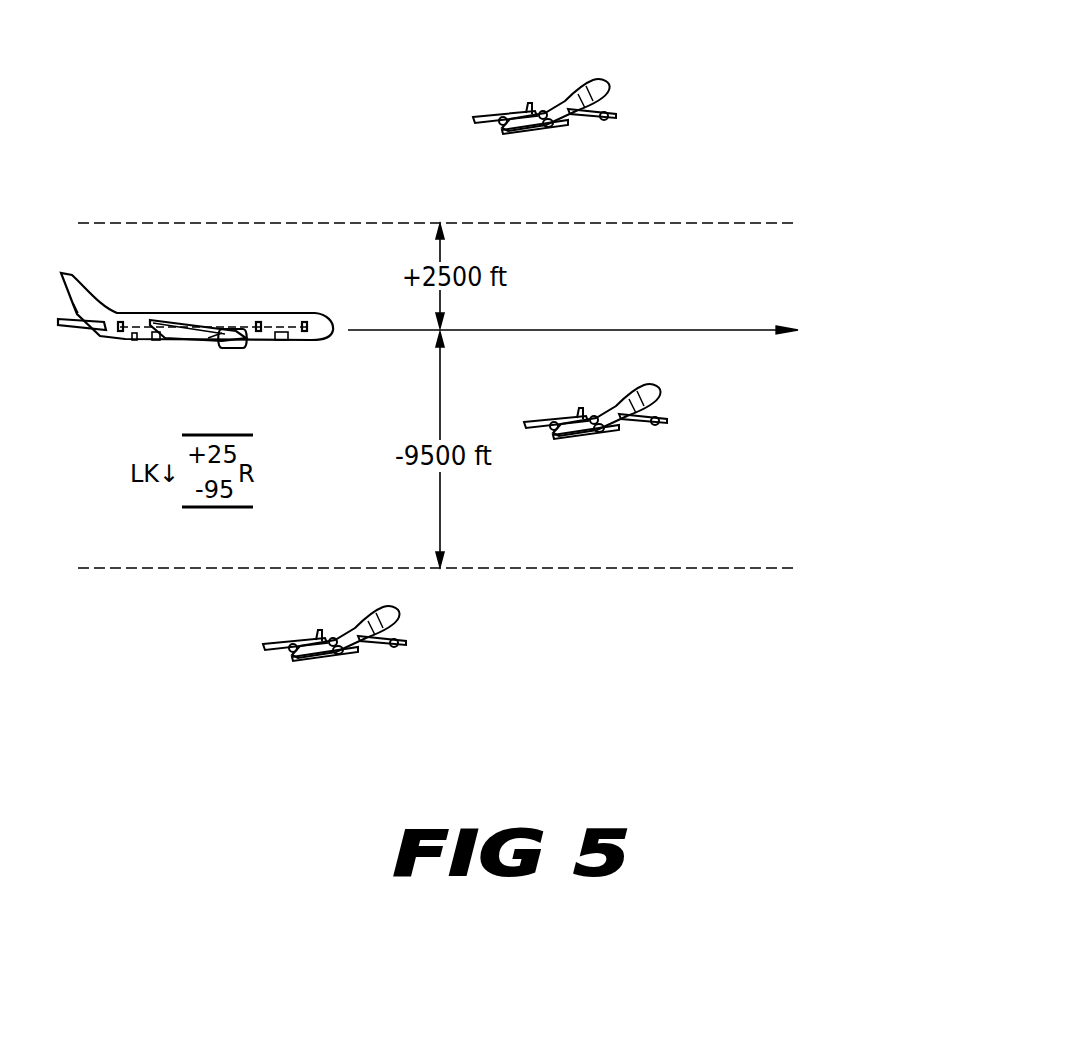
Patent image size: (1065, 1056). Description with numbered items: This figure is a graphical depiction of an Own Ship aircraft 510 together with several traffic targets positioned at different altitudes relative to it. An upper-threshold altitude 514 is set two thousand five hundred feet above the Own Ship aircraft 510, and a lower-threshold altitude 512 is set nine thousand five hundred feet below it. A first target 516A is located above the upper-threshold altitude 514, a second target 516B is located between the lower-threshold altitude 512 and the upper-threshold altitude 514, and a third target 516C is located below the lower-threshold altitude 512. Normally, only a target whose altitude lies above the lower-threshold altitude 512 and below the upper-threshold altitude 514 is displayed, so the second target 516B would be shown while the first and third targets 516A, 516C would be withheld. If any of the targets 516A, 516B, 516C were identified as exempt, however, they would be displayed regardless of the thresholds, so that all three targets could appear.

The Own Ship aircraft 510 is at (98, 338).
The lower-threshold altitude 512 is at (617, 568).
The upper-threshold altitude 514 is at (778, 223).
The first target 516A is at (612, 86).
The second target 516B is at (608, 437).
The third target 516C is at (366, 652).